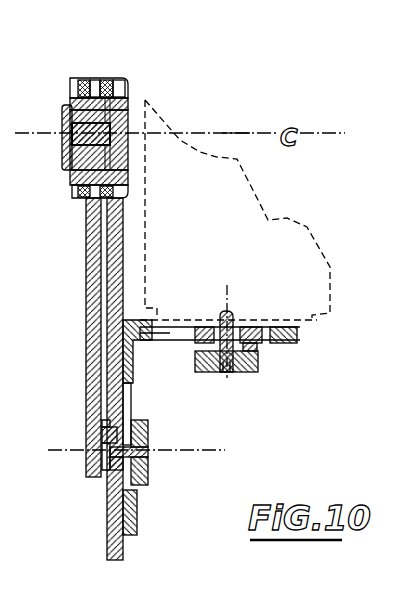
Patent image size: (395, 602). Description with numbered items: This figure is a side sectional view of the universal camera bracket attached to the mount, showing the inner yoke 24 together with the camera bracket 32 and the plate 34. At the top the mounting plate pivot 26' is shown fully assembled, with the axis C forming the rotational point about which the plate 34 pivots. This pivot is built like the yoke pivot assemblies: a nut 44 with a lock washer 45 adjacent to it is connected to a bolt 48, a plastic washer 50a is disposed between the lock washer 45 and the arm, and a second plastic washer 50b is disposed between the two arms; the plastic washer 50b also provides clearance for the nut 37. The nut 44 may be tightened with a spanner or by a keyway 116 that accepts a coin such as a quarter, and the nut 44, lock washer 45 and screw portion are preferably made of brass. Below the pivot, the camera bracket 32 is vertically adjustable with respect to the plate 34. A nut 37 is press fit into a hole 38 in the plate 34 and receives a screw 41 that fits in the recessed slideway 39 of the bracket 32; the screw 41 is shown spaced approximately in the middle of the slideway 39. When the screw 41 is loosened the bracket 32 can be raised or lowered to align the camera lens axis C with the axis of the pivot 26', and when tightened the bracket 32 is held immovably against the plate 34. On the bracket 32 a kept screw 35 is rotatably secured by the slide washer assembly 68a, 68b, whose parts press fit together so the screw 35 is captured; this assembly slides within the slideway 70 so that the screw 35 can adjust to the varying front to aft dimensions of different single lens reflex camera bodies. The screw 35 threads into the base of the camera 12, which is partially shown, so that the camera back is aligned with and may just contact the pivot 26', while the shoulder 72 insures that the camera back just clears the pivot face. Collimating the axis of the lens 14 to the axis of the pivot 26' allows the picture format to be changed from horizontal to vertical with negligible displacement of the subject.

The keyway 116 is at (62, 135).
The nut 44 is at (75, 98).
The lock washer 45 is at (84, 80).
The plastic washer 50a is at (96, 80).
The plastic washer 50b is at (120, 80).
The inner yoke 24 is at (108, 80).
The plate 34 is at (128, 88).
The bolt 48 is at (138, 135).
The mounting plate pivot 26' is at (180, 101).
The lens 14 is at (222, 133).
The camera 12 is at (222, 233).
The shoulder 72 is at (143, 320).
The slideway 70 is at (170, 332).
The slide washer part 68a is at (245, 328).
The slide washer part 68b is at (255, 358).
The camera bracket 32 is at (289, 328).
The kept screw 35 is at (250, 372).
The recessed slideway 39 is at (128, 408).
The screw 41 is at (145, 432).
The nut 37 is at (108, 462).
The hole 38 is at (117, 468).